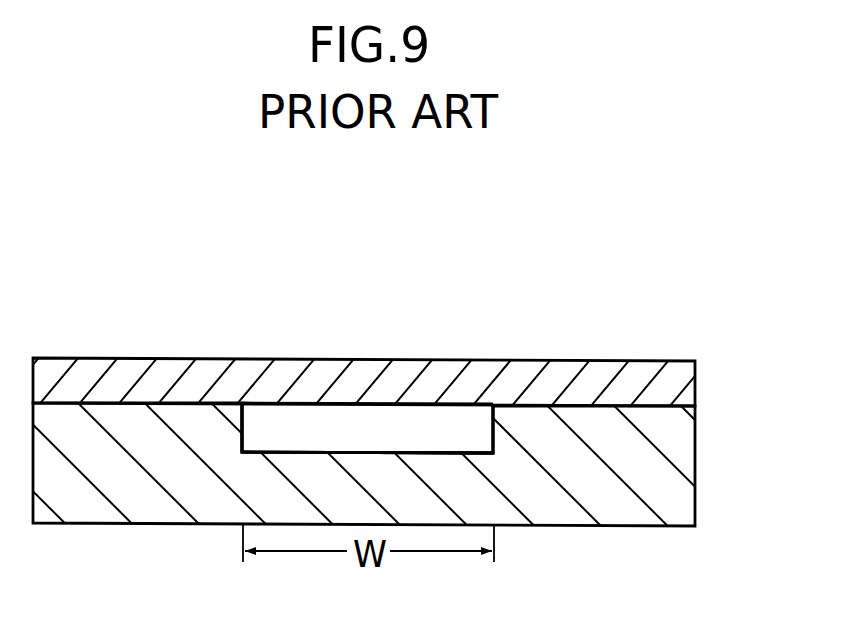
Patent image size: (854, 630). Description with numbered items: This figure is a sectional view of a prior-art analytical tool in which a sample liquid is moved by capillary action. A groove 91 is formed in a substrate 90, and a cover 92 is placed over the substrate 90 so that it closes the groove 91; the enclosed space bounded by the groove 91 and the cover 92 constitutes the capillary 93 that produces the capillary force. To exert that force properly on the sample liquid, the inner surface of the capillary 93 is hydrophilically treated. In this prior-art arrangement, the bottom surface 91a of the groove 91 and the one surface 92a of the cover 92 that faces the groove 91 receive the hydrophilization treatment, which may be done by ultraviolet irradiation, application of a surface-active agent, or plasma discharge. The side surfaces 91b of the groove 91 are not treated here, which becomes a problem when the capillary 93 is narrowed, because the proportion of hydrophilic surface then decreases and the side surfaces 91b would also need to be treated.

The substrate 90 is at (699, 494).
The groove 91 is at (490, 430).
The bottom surface of the groove 91a is at (342, 450).
The side surfaces of the groove 91b is at (247, 426).
The cover 92 is at (601, 359).
The one surface of the cover 92a is at (293, 407).
The capillary 93 is at (402, 432).